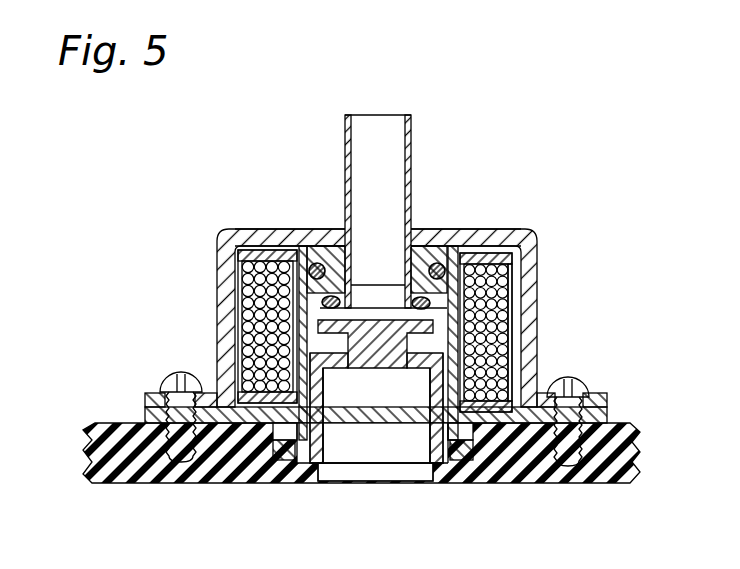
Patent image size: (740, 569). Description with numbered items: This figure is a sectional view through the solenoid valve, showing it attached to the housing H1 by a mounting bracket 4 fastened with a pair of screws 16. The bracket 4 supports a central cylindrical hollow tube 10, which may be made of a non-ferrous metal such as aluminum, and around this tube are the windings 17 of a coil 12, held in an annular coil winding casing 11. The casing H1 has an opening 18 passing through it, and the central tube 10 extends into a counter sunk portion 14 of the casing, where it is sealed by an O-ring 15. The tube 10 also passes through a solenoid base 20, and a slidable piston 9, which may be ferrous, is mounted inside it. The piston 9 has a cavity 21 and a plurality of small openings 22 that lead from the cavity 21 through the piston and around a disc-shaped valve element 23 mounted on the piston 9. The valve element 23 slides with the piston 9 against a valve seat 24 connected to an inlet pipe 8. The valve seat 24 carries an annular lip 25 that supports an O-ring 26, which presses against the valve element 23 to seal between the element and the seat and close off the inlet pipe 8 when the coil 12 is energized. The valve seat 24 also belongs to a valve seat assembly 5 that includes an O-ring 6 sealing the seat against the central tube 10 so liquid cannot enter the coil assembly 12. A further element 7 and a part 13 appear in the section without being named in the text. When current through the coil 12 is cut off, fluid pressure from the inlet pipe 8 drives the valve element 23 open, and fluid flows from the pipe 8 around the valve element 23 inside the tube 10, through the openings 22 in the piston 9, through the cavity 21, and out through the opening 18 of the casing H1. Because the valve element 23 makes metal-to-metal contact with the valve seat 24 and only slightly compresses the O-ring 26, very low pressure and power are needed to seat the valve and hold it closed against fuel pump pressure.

The mounting bracket 4 is at (216, 312).
The valve seat assembly 5 is at (432, 238).
The O-ring 6 is at (452, 248).
The sleeve 7 is at (338, 228).
The inlet pipe 8 is at (413, 125).
The piston 9 is at (322, 462).
The central cylindrical hollow tube 10 is at (315, 247).
The annular coil winding casing 11 is at (497, 255).
The coil 12 is at (512, 282).
The mounting plate 13 is at (607, 408).
The counter sunk portion 14 is at (483, 440).
The O-ring 15 is at (446, 462).
The screws 16 is at (580, 372).
The windings 17 is at (500, 330).
The opening 18 is at (375, 472).
The solenoid base 20 is at (208, 387).
The cavity 21 is at (386, 448).
The small openings 22 is at (333, 358).
The valve element 23 is at (418, 333).
The valve seat 24 is at (425, 309).
The annular lip 25 is at (428, 306).
The O-ring 26 is at (430, 265).
The housing H1 is at (606, 484).